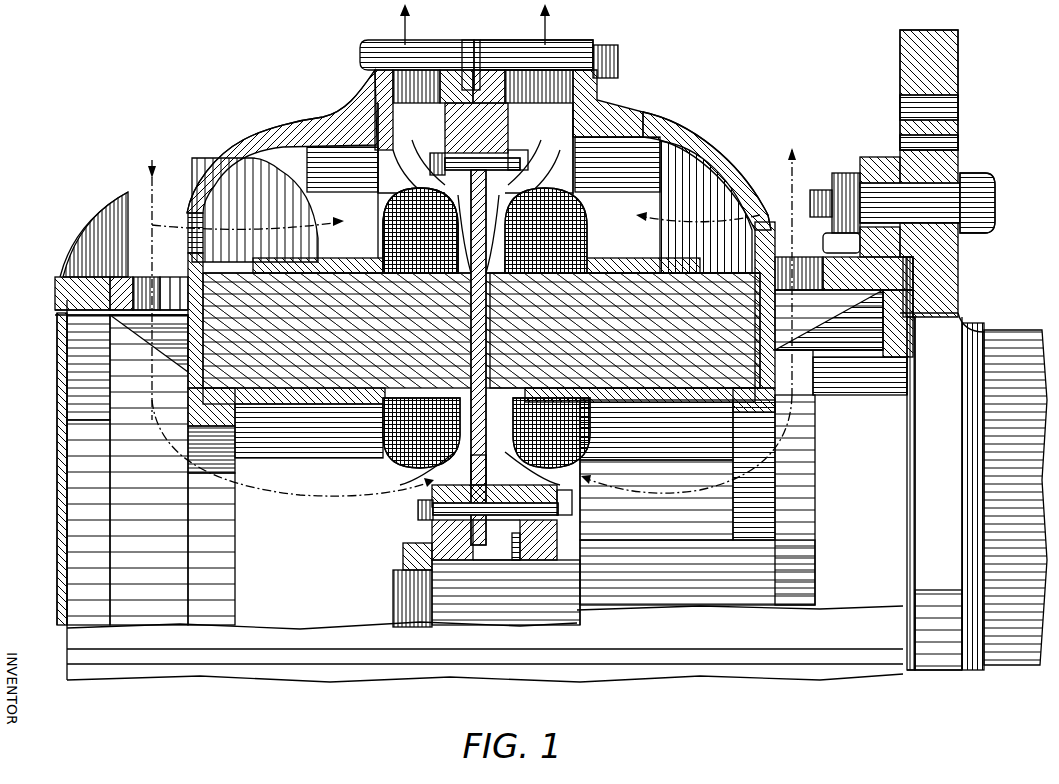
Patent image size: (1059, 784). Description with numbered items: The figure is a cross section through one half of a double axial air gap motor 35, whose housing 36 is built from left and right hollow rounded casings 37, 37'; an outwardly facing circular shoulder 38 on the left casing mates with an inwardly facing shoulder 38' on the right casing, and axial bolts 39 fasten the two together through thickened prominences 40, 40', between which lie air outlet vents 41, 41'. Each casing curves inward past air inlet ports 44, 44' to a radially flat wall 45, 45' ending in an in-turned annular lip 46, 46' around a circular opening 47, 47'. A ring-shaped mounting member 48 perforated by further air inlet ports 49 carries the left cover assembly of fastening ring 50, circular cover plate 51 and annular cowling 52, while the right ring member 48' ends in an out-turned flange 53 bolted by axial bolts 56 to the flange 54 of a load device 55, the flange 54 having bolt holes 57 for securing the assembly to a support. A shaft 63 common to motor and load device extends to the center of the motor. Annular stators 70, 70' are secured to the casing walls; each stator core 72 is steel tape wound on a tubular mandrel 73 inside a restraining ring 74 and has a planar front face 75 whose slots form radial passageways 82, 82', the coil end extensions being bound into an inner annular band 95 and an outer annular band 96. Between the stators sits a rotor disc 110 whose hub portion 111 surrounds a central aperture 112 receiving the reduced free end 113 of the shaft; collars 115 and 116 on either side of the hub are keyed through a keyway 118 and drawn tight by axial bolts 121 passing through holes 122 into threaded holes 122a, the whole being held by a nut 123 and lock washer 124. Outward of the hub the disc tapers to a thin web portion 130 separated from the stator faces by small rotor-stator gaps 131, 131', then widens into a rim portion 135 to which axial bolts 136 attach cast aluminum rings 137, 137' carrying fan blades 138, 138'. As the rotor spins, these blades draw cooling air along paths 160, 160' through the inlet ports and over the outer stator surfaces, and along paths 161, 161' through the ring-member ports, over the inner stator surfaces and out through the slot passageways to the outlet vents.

The double axial air gap motor 35 is at (42, 500).
The housing 36 is at (245, 130).
The left hand casing 37 is at (282, 141).
The right hand casing 37' is at (707, 154).
The outwardly facing circular shoulder 38 is at (457, 49).
The inwardly facing circular shoulder 38' is at (488, 49).
The axial bolts 39 is at (618, 62).
The prominences 40 is at (476, 39).
The prominences 40' is at (538, 37).
The air outlet vents 41 is at (357, 108).
The vents 41' is at (609, 103).
The air inlet ports 44 is at (172, 290).
The inlet passage 44' is at (774, 268).
The radially flat wall 45 is at (179, 300).
The housing side wall 45' is at (789, 305).
The in-turned annular lip 46 is at (286, 419).
The end plate 46' is at (650, 464).
The circular opening 47 is at (172, 470).
The support column 47' is at (755, 500).
The ring-shaped mounting member 48 is at (143, 256).
The ring member 48' is at (868, 298).
The air inlet ports 49 is at (122, 292).
The fastening ring 50 is at (55, 291).
The circular cover plate 51 is at (60, 405).
The annular cowling 52 is at (96, 220).
The out-turned flange 53 is at (868, 157).
The flange 54 is at (950, 152).
The load device 55 is at (1002, 333).
The axial bolts 56 is at (985, 204).
The bolt holes 57 is at (945, 121).
The shaft 63 is at (660, 554).
The left-hand annular stator 70 is at (403, 433).
The right-hand annular stator 70' is at (579, 433).
The stator core 72 is at (227, 284).
The tubular mandrel 73 is at (330, 406).
The restraining ring 74 is at (286, 267).
The front face 75 is at (471, 317).
The radial passageways 82 is at (481, 330).
The rotor body 82' is at (625, 330).
The inner annular band 95 is at (420, 470).
The outer annular band 96 is at (386, 212).
The rotor disc 110 is at (452, 481).
The hub portion 111 is at (486, 457).
The central rotor aperture 112 is at (485, 528).
The free end 113 is at (477, 610).
The collar 115 is at (432, 531).
The collar 116 is at (560, 522).
The keyway 118 is at (572, 556).
The axial bolts 121 is at (418, 510).
The holes 122 is at (508, 541).
The threaded holes 122a is at (565, 500).
The nut 123 is at (395, 585).
The lock washer 124 is at (403, 556).
The web portion 130 is at (487, 316).
The rotor-stator gap 131 is at (396, 230).
The rotor-stator gap 131' is at (564, 230).
The rotor rim portion 135 is at (488, 133).
The axial bolts 136 is at (468, 172).
The cast aluminum ring 137 is at (448, 104).
The cast aluminum ring 137' is at (505, 103).
The fan blades 138 is at (411, 149).
The fan blades 138' is at (589, 142).
The air path 160 is at (248, 216).
The air path 160' is at (692, 227).
The air path 161 is at (293, 469).
The air path 161' is at (686, 455).